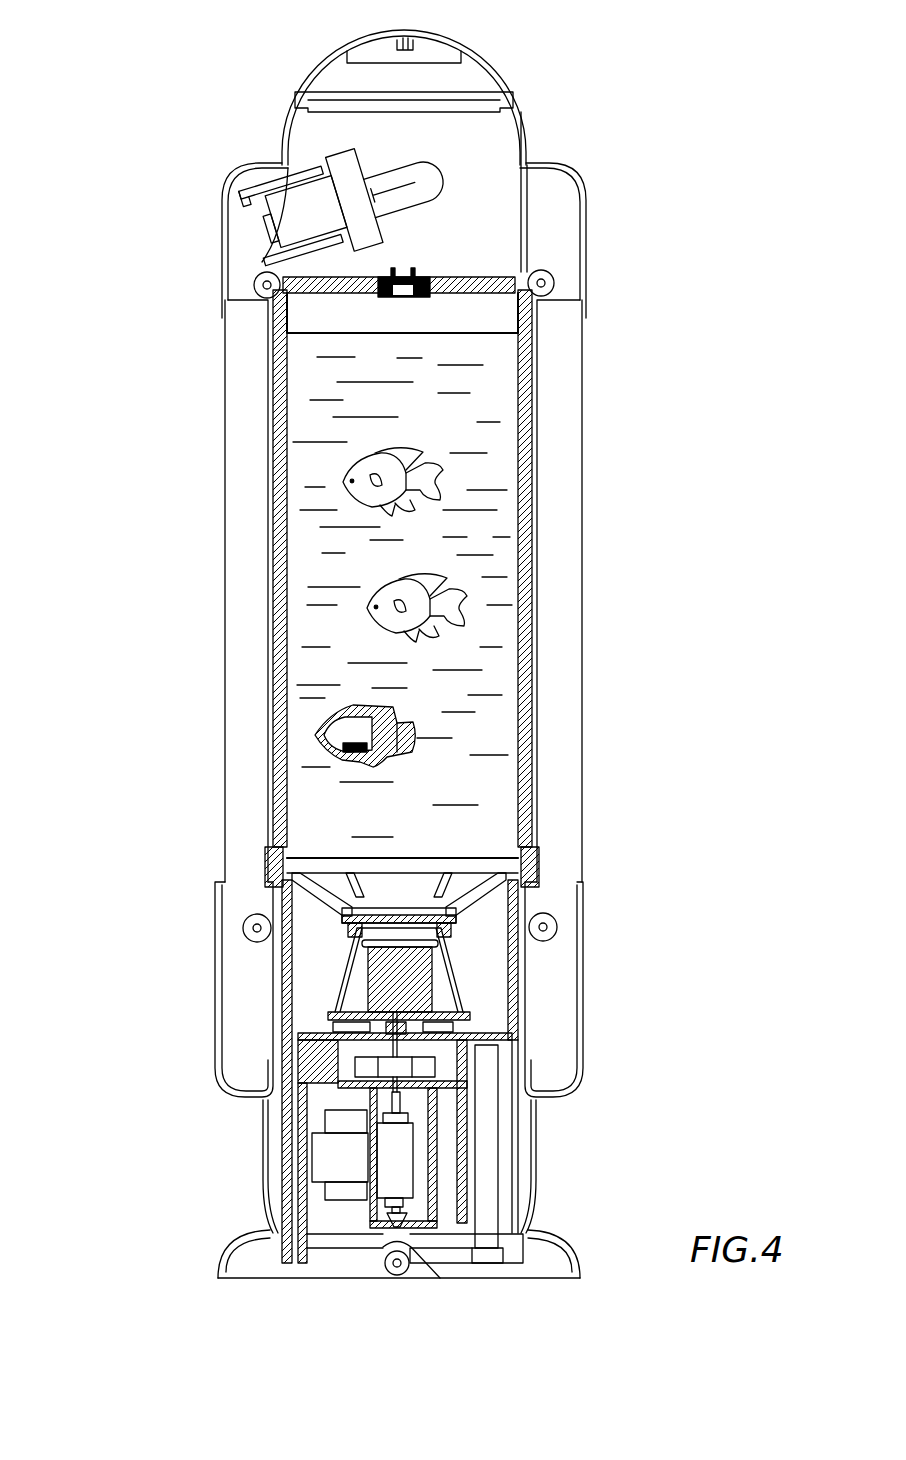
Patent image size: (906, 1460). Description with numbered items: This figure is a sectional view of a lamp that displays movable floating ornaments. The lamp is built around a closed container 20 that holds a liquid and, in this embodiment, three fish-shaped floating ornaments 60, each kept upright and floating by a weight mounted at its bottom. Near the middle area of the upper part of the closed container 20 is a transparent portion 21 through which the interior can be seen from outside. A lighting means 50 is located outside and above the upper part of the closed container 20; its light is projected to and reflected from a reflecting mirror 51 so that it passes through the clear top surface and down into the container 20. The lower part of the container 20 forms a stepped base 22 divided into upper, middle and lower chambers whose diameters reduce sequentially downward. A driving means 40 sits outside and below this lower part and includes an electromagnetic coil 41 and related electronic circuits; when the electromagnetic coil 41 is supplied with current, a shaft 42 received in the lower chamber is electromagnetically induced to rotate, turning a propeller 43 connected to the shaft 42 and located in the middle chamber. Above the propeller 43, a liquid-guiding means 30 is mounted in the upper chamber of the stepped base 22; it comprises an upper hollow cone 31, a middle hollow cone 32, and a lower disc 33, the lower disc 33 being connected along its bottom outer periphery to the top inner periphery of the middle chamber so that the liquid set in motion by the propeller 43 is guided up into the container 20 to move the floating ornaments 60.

The closed container 20 is at (252, 558).
The transparent portion 21 is at (277, 690).
The stepped base 22 is at (290, 990).
The liquid-guiding means 30 is at (324, 954).
The upper hollow cone 31 is at (447, 927).
The middle hollow cone 32 is at (450, 998).
The lower disc 33 is at (460, 1028).
The driving means 40 is at (331, 1159).
The electromagnetic coil 41 is at (357, 1167).
The shaft 42 is at (400, 1167).
The propeller 43 is at (427, 1062).
The lighting means 50 is at (287, 208).
The reflecting mirror 51 is at (478, 95).
The floating ornaments 60 is at (397, 473).